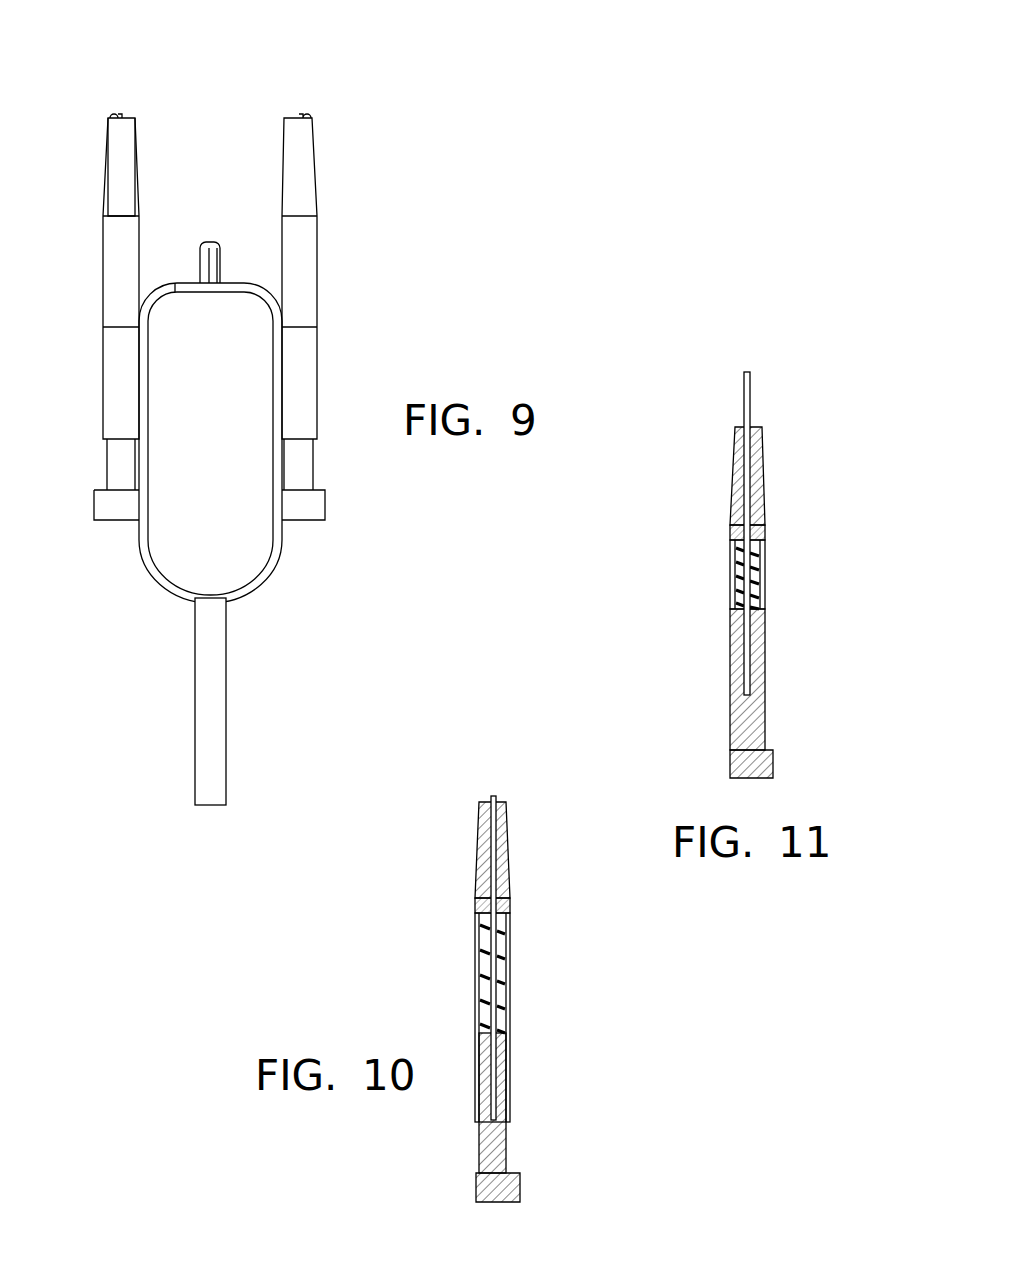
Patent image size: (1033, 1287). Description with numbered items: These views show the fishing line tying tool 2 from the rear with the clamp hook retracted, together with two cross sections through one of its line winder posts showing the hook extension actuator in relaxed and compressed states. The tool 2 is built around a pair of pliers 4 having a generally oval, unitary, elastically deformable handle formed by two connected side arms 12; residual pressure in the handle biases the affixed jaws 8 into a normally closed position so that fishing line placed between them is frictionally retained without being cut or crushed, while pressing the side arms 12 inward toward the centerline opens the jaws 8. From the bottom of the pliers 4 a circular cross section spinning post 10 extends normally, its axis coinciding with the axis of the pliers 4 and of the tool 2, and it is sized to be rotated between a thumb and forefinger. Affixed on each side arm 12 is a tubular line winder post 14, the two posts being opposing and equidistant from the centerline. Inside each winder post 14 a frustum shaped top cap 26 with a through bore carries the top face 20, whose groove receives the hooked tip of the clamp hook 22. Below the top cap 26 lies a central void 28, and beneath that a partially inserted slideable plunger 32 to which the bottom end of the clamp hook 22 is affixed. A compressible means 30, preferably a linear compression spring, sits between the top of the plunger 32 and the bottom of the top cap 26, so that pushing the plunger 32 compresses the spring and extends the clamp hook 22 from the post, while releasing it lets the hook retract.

In FIG. 9, the tool 2 is at (232, 432).
In FIG. 9, the pliers 4 is at (245, 283).
In FIG. 9, the jaws 8 is at (200, 265).
In FIG. 9, the spinning post 10 is at (226, 755).
In FIG. 9, the side arms 12 is at (267, 573).
In FIG. 9, the line winder post 14 is at (317, 270).
In FIG. 11, the line winder post 14 is at (739, 569).
In FIG. 10, the line winder post 14 is at (528, 999).
In FIG. 11, the top face 20 is at (740, 425).
In FIG. 11, the clamp hook 22 is at (751, 393).
In FIG. 11, the top cap 26 is at (758, 472).
In FIG. 10, the central void 28 is at (500, 952).
In FIG. 10, the compressible means 30 is at (485, 972).
In FIG. 10, the plunger 32 is at (508, 1155).